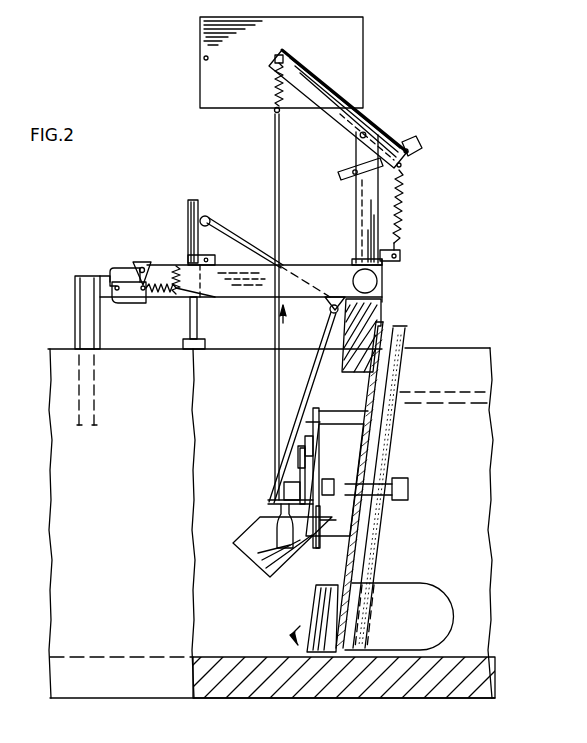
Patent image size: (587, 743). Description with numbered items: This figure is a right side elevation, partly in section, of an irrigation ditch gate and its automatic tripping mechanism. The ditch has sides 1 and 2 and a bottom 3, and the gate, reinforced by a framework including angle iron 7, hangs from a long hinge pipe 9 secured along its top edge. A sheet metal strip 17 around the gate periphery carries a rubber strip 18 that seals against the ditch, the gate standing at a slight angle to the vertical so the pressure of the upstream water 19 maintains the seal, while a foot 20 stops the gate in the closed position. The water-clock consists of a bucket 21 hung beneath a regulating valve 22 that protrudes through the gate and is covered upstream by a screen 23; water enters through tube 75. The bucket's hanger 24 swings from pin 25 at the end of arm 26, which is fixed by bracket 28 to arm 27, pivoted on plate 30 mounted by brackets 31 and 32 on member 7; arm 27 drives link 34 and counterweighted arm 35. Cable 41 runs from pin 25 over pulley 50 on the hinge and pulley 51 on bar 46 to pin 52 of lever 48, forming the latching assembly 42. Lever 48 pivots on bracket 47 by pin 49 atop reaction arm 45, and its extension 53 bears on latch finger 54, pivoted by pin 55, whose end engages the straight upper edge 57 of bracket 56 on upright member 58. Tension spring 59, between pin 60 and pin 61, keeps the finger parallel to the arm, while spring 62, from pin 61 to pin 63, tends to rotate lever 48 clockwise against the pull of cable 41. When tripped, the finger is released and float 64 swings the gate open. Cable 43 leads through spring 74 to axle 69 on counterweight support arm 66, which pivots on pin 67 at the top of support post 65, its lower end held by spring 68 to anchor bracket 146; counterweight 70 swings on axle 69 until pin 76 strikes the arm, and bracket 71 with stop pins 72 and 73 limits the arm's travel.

The ditch side 1 is at (196, 637).
The ditch side 2 is at (446, 507).
The ditch bottom 3 is at (263, 657).
The angle iron 7 is at (318, 600).
The pipe 9 is at (347, 264).
The sheet metal strip 17 is at (370, 548).
The rubber strip 18 is at (366, 568).
The water 19 is at (488, 570).
The foot 20 is at (198, 330).
The bucket 21 is at (242, 545).
The regulating valve 22 is at (335, 480).
The screen 23 is at (371, 505).
The hanger 24 is at (270, 532).
The pin 25 is at (266, 500).
The arm 26 is at (292, 526).
The arm 27 is at (300, 470).
The bracket 28 is at (290, 490).
The plate 30 is at (316, 424).
The bracket 31 is at (347, 423).
The bracket 32 is at (332, 540).
The link 34 is at (299, 452).
The arm 35 is at (311, 438).
The cable 41 is at (307, 400).
The latching assembly 42 is at (296, 324).
The cable 43 is at (274, 130).
The reaction arm 45 is at (312, 264).
The bar 46 is at (187, 218).
The bracket 47 is at (137, 266).
The lever 48 is at (208, 248).
The pivot pin 49 is at (142, 265).
The pulley 50 is at (330, 311).
The pulley 51 is at (212, 220).
The pin 52 is at (217, 257).
The extension 53 is at (120, 270).
The latch finger 54 is at (125, 298).
The pivot pin 55 is at (117, 297).
The bracket 56 is at (86, 275).
The straight upper edge 57 is at (85, 249).
The upright member 58 is at (75, 310).
The tension spring 59 is at (156, 292).
The pin 60 is at (143, 298).
The pin 61 is at (200, 297).
The tension spring 62 is at (180, 289).
The pin 63 is at (165, 255).
The float 64 is at (413, 616).
The support post 65 is at (356, 221).
The counterweight support arm 66 is at (361, 112).
The pivot pin 67 is at (358, 135).
The spring 68 is at (404, 210).
The axle 69 is at (291, 60).
The counterweight 70 is at (297, 62).
The bracket 71 is at (427, 151).
The stop pin 72 is at (408, 148).
The stop pin 73 is at (340, 172).
The spring 74 is at (272, 90).
The tube 75 is at (339, 460).
The pin 76 is at (205, 56).
The anchor bracket 146 is at (401, 258).